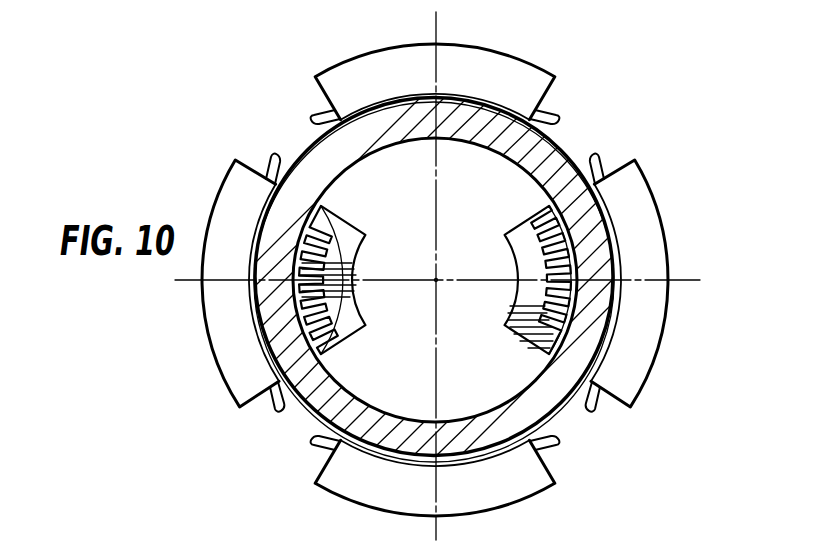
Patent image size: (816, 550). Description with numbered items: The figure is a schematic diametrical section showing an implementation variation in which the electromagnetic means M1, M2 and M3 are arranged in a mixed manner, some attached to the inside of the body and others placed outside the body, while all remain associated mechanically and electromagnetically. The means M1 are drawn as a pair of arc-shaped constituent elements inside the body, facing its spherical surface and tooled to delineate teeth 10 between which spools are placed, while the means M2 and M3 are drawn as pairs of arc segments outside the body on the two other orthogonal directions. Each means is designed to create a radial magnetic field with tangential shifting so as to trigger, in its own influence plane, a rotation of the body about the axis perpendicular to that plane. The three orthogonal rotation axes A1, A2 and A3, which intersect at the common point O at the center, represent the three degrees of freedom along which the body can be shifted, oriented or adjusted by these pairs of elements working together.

The teeth 10 is at (552, 301).
The electromagnetic means M1 is at (527, 220).
The electromagnetic means M2 is at (626, 153).
The electromagnetic means M3 is at (528, 478).
The rotation axis A1 is at (438, 280).
The rotation axis A2 is at (684, 279).
The rotation axis A3 is at (438, 31).